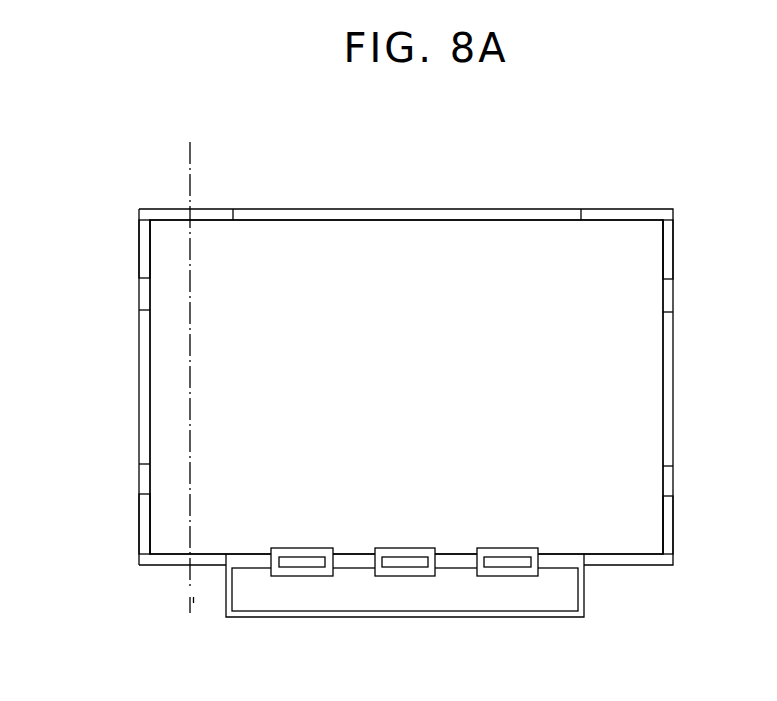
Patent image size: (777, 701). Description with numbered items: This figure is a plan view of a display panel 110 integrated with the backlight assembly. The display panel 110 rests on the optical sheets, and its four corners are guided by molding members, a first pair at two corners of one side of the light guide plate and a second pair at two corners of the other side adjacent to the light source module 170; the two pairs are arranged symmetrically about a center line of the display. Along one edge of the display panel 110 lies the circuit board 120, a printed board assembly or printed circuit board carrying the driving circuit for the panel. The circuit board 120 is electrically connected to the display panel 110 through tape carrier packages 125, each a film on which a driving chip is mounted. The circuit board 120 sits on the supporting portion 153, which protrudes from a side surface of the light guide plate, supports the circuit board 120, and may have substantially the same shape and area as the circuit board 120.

The display panel 110 is at (393, 240).
The circuit board 120 is at (433, 592).
The tape carrier package 125 is at (508, 567).
The supporting portion 153 is at (565, 613).
The light source module 170 is at (665, 385).